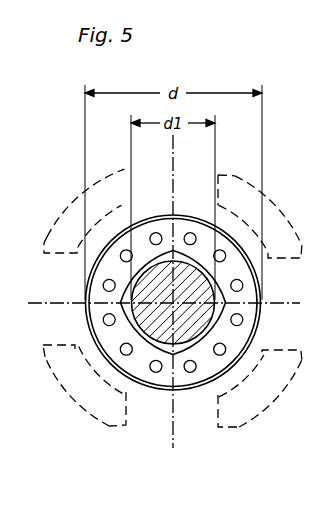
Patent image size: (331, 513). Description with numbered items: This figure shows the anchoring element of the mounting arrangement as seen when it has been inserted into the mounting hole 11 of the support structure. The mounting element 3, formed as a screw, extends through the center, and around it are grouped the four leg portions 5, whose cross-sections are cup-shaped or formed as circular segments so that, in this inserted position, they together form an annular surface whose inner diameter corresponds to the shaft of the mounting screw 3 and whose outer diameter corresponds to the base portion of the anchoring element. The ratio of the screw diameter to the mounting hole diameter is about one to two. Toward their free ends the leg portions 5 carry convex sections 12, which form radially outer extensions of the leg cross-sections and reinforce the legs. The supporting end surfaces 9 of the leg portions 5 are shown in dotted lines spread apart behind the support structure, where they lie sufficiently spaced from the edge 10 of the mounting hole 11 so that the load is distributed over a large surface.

The mounting element 3 is at (185, 323).
The leg portions 5 is at (137, 226).
The supporting end surfaces 9 is at (237, 262).
The edge 10 is at (114, 236).
The mounting hole 11 is at (158, 388).
The convex sections 12 is at (236, 248).